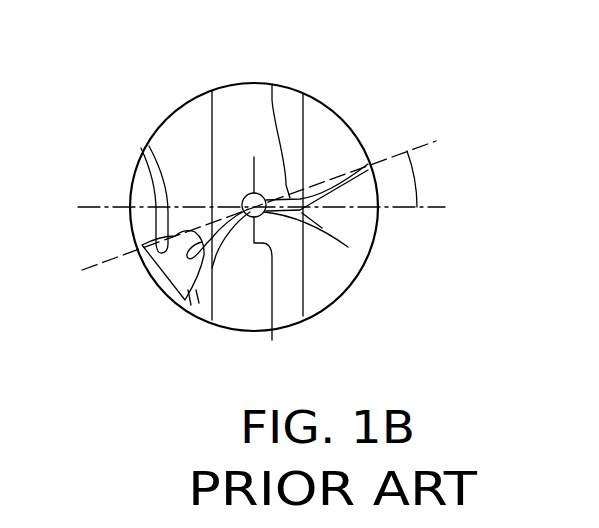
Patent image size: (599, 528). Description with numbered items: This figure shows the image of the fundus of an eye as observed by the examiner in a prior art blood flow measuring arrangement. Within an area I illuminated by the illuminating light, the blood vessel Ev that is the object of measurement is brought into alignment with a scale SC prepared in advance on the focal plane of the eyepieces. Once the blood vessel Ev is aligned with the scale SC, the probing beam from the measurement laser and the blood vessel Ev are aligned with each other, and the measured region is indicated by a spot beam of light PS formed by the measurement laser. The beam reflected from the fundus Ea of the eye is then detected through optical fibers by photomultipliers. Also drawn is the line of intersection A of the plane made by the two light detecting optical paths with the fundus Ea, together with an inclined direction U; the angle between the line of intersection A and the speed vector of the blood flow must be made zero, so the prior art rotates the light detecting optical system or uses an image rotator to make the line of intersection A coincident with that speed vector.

The area being illuminated I is at (230, 314).
The fundus of the eye Ea is at (232, 95).
The blood vessel Ev is at (272, 84).
The spot beam of light PS is at (270, 213).
The scale SC is at (272, 340).
The line of intersection A is at (276, 208).
The inclined direction line U is at (270, 198).